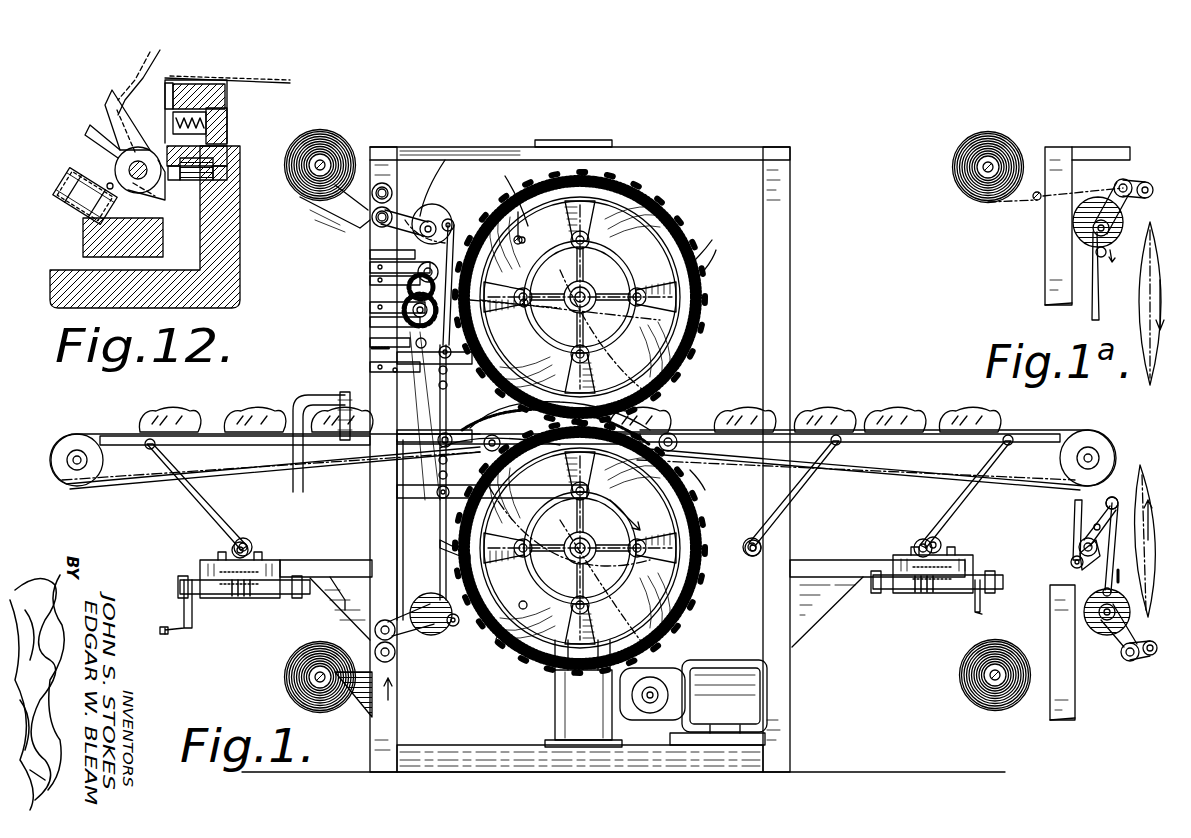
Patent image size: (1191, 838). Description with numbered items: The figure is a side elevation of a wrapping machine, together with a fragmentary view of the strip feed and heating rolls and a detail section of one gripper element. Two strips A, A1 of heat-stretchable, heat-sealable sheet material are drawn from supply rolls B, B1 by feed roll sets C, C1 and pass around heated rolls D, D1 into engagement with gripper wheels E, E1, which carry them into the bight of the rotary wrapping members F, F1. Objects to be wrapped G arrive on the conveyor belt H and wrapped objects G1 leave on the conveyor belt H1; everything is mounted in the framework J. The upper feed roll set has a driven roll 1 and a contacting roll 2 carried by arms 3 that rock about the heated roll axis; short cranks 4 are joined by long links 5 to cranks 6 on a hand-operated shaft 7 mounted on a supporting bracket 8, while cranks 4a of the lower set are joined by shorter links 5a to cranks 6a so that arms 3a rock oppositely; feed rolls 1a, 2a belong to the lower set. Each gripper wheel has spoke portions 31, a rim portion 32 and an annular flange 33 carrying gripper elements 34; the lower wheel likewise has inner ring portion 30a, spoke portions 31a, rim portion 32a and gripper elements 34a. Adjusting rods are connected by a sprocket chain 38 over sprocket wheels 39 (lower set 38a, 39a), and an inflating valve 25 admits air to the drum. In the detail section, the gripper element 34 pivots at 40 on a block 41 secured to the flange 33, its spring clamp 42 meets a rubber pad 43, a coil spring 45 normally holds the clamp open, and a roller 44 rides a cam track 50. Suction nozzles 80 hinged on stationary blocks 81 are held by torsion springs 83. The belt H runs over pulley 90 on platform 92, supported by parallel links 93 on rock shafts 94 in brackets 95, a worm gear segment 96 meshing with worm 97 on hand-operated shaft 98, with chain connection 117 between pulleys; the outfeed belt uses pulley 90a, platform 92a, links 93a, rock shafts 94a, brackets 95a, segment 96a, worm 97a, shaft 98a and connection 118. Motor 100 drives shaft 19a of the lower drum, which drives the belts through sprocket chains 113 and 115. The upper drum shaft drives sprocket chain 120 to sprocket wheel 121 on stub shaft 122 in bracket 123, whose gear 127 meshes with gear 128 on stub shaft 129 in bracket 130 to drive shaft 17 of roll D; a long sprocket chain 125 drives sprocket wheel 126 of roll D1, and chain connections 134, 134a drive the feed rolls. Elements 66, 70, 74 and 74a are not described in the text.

In FIG. 12, the annular flange 33 is at (240, 238).
In FIG. 1, the annular flange 33 is at (578, 236).
In FIG. 12, the spring clamp 42 is at (140, 62).
In FIG. 12, the rubber pad 43 is at (225, 96).
In FIG. 12, the block 41 is at (206, 118).
In FIG. 12, the coil spring 45 is at (215, 135).
In FIG. 12, the pivot 40 is at (133, 165).
In FIG. 12, the gripper element 34 is at (100, 140).
In FIG. 1, the gripper element 34 is at (700, 262).
In FIG. 12, the roller 44 is at (80, 180).
In FIG. 12, the cam track 50 is at (83, 244).
In FIG. 1A, the supply roll B is at (999, 125).
In FIG. 1, the supply roll B is at (309, 145).
In FIG. 1A, the strip A is at (1022, 200).
In FIG. 1, the strip A is at (428, 215).
In FIG. 1A, the driven roll 1 is at (1127, 184).
In FIG. 1, the driven roll 1 is at (374, 222).
In FIG. 1A, the contacting roll 2 is at (1148, 182).
In FIG. 1, the contacting roll 2 is at (390, 195).
In FIG. 1A, the arms 3 is at (1118, 215).
In FIG. 1, the arms 3 is at (400, 235).
In FIG. 1A, the short cranks 4 is at (1097, 242).
In FIG. 1, the short cranks 4 is at (455, 218).
In FIG. 1A, the long links 5 is at (1093, 310).
In FIG. 1, the long links 5 is at (1075, 505).
In FIG. 1A, the heated roll D is at (1108, 252).
In FIG. 1, the heated roll D is at (462, 210).
In FIG. 1, the framework J is at (801, 258).
In FIG. 1, the rotary wrapping member F is at (658, 198).
In FIG. 1, the gripper wheels E is at (655, 225).
In FIG. 1, the spoke portions 31 is at (702, 298).
In FIG. 1, the rim portion 32 is at (552, 255).
In FIG. 1, the sprocket chain 38 is at (598, 242).
In FIG. 1, the sprocket wheels 39 is at (588, 240).
In FIG. 1, the sprocket chain 120 is at (500, 295).
In FIG. 1, the sprocket wheel 121 is at (486, 316).
In FIG. 1, the inflating valve 25 is at (478, 645).
In FIG. 1, the guide 74 is at (512, 358).
In FIG. 1, the lower rotary wrapping member F1 is at (697, 632).
In FIG. 1, the lower gripper wheels E1 is at (700, 600).
In FIG. 1, the spoke portions 31a is at (703, 522).
In FIG. 1, the sprocket wheels 39a is at (708, 530).
In FIG. 1, the inner ring portion 30a is at (637, 515).
In FIG. 1, the shaft 19a is at (615, 585).
In FIG. 1, the lever 70 is at (479, 532).
In FIG. 1, the shorter links 5a is at (470, 625).
In FIG. 1, the rim portion 32a is at (530, 655).
In FIG. 1, the gripper elements 34a is at (560, 680).
In FIG. 1, the sprocket chain 38a is at (490, 678).
In FIG. 1, the sprocket wheel 126 is at (486, 638).
In FIG. 1, the sprocket chain 115 is at (709, 478).
In FIG. 1, the sprocket chain 113 is at (492, 416).
In FIG. 1, the stationary blocks 81 is at (412, 448).
In FIG. 1, the suction nozzles 80 is at (452, 410).
In FIG. 1, the feed rolls C is at (386, 170).
In FIG. 1, the chain and sprocket connection 134 is at (440, 165).
In FIG. 1, the shaft 17 is at (435, 215).
In FIG. 1, the second fixed bracket 130 is at (372, 256).
In FIG. 1, the stub shaft 129 is at (372, 266).
In FIG. 1, the gear 128 is at (372, 280).
In FIG. 1, the gear 127 is at (372, 292).
In FIG. 1, the stub shaft 122 is at (372, 309).
In FIG. 1, the fixed bracket 123 is at (372, 322).
In FIG. 1, the long sprocket chain 125 is at (385, 340).
In FIG. 1, the torsion springs 83 is at (345, 392).
In FIG. 1, the rod 66 is at (430, 430).
In FIG. 1, the conveyor belt H is at (78, 425).
In FIG. 1, the pulley 90 is at (70, 470).
In FIG. 1, the platform 92 is at (112, 436).
In FIG. 1, the chain and sprocket connection 117 is at (135, 468).
In FIG. 1, the objects to be wrapped G is at (182, 405).
In FIG. 1, the parallel links 93 is at (320, 498).
In FIG. 1, the rock shafts 94 is at (252, 545).
In FIG. 1, the worm gear segment 96 is at (200, 562).
In FIG. 1, the worm 97 is at (245, 598).
In FIG. 1, the hand-operated shaft 98 is at (222, 598).
In FIG. 1, the brackets 95 is at (292, 562).
In FIG. 1, the supporting bracket 8 is at (353, 546).
In FIG. 1, the cranks 6 is at (355, 526).
In FIG. 1, the guide 74a is at (322, 520).
In FIG. 1, the chain and sprocket connection 134a is at (332, 585).
In FIG. 1, the strip A1 is at (336, 643).
In FIG. 1, the supply roll B1 is at (275, 665).
In FIG. 1, the feed roll 1a is at (378, 620).
In FIG. 1, the arms 3a is at (410, 600).
In FIG. 1, the cranks 4a is at (1100, 600).
In FIG. 1, the feed roll 2a is at (397, 656).
In FIG. 1, the lower heated roll D1 is at (460, 647).
In FIG. 1, the lower feed rolls C1 is at (383, 699).
In FIG. 1, the outfeed conveyor belt H1 is at (1035, 429).
In FIG. 1, the pulley 90a is at (1088, 432).
In FIG. 1, the platform 92a is at (925, 434).
In FIG. 1, the chain and sprocket connection 118 is at (1015, 478).
In FIG. 1, the wrapped objects G1 is at (820, 402).
In FIG. 1, the parallel motion links 93a is at (808, 480).
In FIG. 1, the rock shafts 94a is at (762, 547).
In FIG. 1, the brackets 95a is at (850, 560).
In FIG. 1, the worm gear segment 96a is at (975, 562).
In FIG. 1, the worm 97a is at (918, 595).
In FIG. 1, the hand-operated shaft 98a is at (945, 590).
In FIG. 1, the electric motor 100 is at (770, 678).
In FIG. 1, the hand-operated shaft 7 is at (1078, 545).
In FIG. 1, the cranks 6a is at (1092, 528).